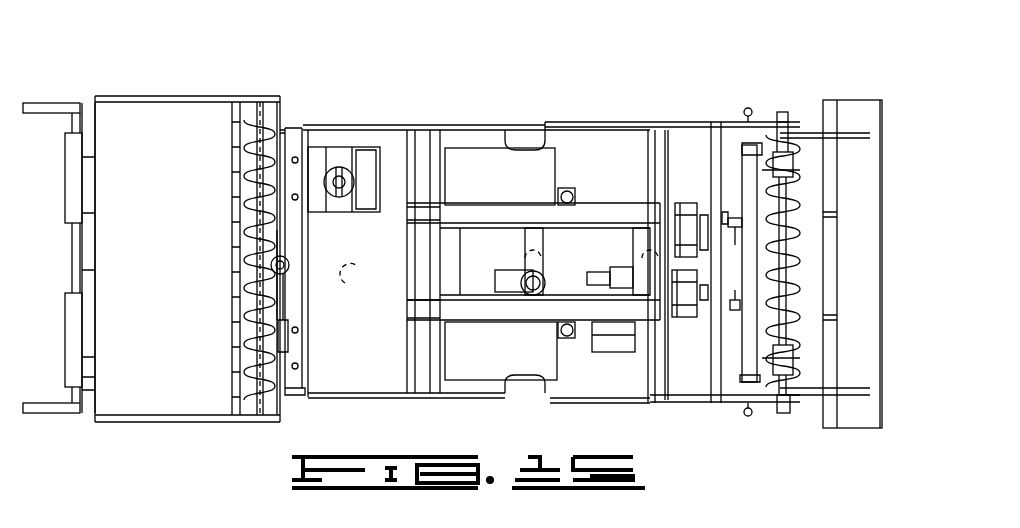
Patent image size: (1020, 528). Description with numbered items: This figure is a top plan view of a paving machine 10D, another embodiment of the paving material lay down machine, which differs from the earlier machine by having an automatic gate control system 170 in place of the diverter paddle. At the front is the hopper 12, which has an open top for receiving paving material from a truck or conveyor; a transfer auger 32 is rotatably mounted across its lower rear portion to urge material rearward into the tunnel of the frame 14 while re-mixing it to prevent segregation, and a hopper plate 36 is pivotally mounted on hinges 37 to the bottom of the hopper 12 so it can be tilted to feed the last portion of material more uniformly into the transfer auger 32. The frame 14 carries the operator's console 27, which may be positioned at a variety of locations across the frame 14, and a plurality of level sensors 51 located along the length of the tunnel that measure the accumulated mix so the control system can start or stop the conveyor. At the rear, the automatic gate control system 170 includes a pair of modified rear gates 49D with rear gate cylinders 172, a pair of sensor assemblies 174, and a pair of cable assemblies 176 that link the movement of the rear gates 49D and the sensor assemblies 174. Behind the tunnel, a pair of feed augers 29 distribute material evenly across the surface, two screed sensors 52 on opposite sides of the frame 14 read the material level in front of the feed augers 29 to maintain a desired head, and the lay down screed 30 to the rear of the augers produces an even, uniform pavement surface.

The paving machine 10D is at (245, 72).
The front hopper 12 is at (166, 97).
The hopper plate 36 is at (123, 122).
The hinges 37 is at (227, 365).
The transfer auger 32 is at (255, 372).
The frame 14 is at (470, 130).
The operator's console 27 is at (337, 147).
The level sensors 51 is at (640, 257).
The modified rear gates 49D is at (682, 205).
The rear gate cylinders 172 is at (706, 233).
The automatic gate control system 170 is at (689, 163).
The cable assemblies 176 is at (717, 287).
The screed sensors 52 is at (748, 107).
The sensor assemblies 174 is at (740, 213).
The feed augers 29 is at (787, 245).
The lay down screed 30 is at (860, 292).